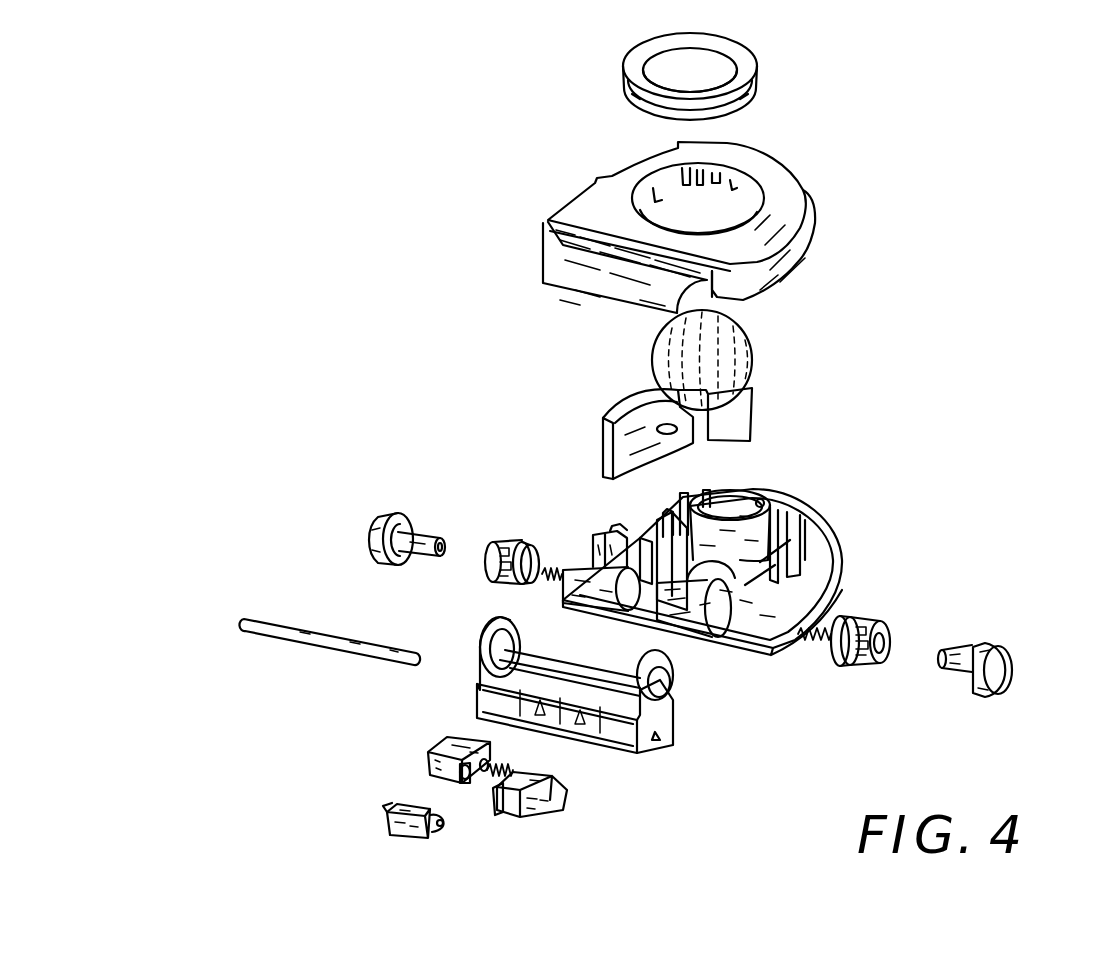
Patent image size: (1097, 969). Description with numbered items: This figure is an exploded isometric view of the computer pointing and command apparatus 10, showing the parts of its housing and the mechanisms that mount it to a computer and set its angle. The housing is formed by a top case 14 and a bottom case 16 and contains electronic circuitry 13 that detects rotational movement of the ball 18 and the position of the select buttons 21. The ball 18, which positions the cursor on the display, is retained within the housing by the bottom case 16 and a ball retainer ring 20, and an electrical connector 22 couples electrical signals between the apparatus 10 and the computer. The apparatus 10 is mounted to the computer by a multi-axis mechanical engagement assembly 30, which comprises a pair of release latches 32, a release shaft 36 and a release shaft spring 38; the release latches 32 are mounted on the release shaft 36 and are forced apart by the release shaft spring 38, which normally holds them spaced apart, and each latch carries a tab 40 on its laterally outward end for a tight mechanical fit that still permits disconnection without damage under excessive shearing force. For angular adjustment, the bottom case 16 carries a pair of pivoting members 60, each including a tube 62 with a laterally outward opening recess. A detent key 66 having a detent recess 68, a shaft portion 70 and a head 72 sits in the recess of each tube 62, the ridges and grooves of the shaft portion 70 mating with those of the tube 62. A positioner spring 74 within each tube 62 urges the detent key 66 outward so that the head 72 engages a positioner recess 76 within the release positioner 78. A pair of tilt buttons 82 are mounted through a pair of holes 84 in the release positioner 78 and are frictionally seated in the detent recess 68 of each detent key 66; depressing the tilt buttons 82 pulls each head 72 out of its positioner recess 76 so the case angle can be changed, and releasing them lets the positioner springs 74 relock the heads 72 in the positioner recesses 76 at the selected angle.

The computer pointing and command apparatus 10 is at (266, 800).
The electronic circuitry 13 is at (732, 566).
The top case 14 is at (798, 178).
The bottom case 16 is at (840, 568).
The ball 18 is at (752, 368).
The ball retainer ring 20 is at (753, 62).
The select buttons 21 is at (603, 438).
The electrical connector 22 is at (437, 836).
The multi-axis mechanical engagement assembly 30 is at (510, 800).
The release latches 32 is at (432, 742).
The release shaft 36 is at (337, 648).
The release shaft spring 38 is at (503, 773).
The tab 40 is at (447, 780).
The pivoting members 60 is at (707, 643).
The tube 62 is at (727, 625).
The detent key 66 is at (689, 597).
The detent recess 68 is at (885, 646).
The shaft portion 70 is at (523, 543).
The head 72 is at (488, 557).
The positioner spring 74 is at (557, 570).
The positioner recess 76 is at (517, 627).
The release positioner 78 is at (603, 705).
The tilt buttons 82 is at (397, 513).
The holes 84 is at (673, 687).